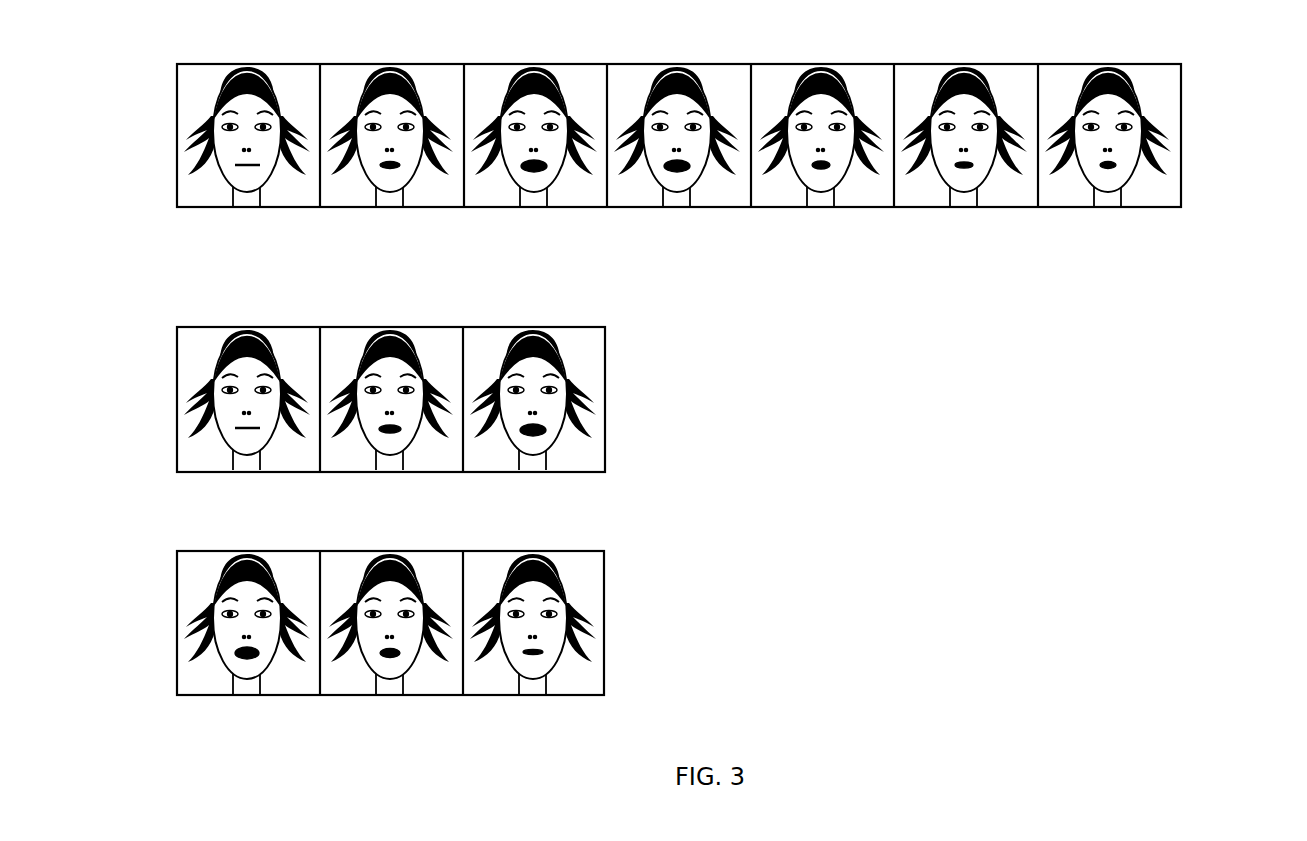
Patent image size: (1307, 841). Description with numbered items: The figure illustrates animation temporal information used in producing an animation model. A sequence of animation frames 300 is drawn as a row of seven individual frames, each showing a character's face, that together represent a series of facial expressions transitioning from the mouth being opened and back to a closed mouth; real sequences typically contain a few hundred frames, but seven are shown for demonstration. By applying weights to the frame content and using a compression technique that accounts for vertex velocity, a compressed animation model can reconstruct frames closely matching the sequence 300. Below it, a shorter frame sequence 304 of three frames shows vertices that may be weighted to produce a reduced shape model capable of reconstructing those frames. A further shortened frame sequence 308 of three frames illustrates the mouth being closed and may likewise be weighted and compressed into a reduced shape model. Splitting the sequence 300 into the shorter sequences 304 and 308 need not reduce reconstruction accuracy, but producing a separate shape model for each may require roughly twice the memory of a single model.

The sequence of animation frames 300 is at (738, 120).
The frame sequence 304 is at (451, 384).
The shortened frame sequence 308 is at (445, 608).